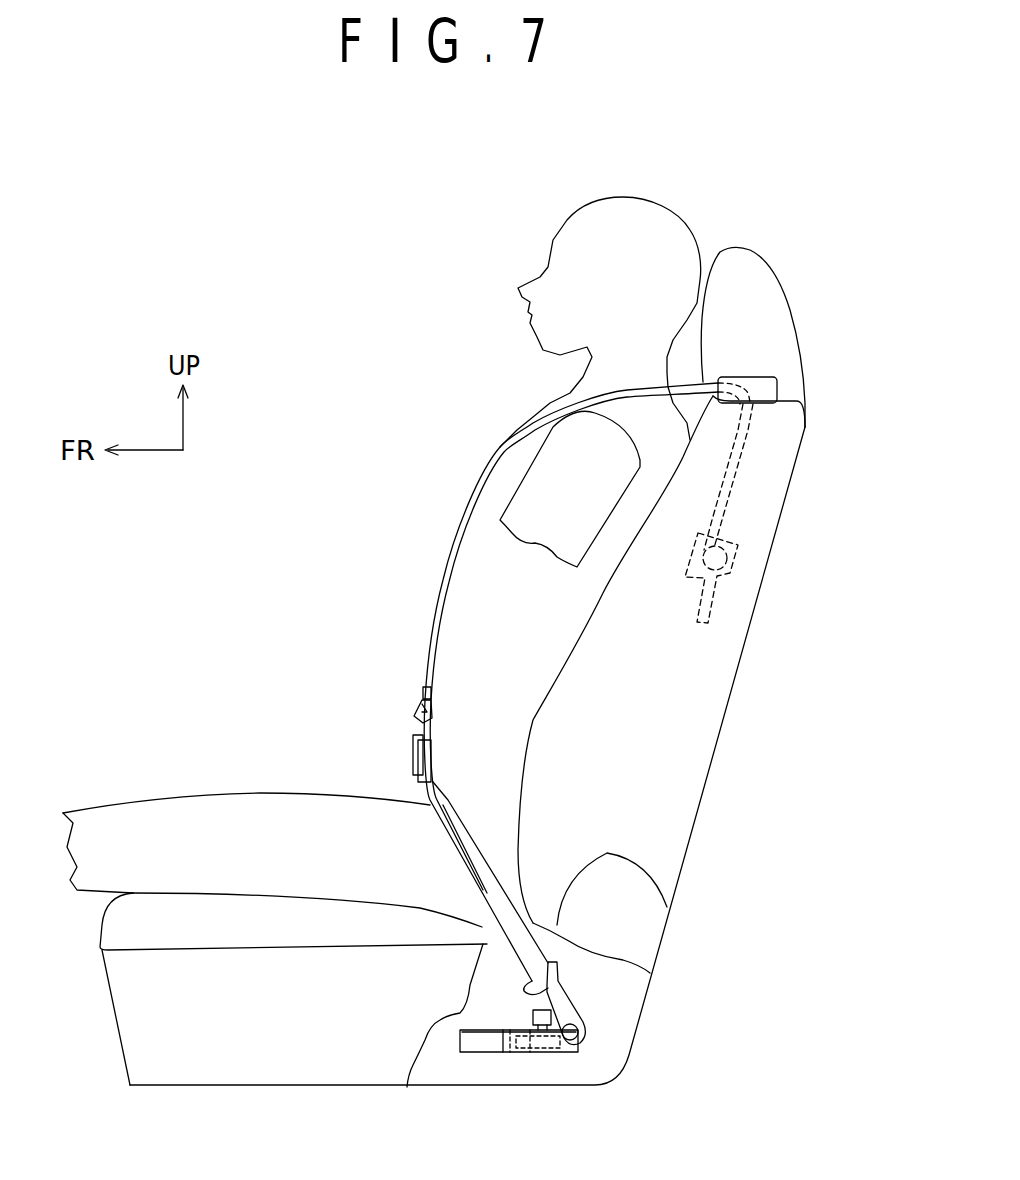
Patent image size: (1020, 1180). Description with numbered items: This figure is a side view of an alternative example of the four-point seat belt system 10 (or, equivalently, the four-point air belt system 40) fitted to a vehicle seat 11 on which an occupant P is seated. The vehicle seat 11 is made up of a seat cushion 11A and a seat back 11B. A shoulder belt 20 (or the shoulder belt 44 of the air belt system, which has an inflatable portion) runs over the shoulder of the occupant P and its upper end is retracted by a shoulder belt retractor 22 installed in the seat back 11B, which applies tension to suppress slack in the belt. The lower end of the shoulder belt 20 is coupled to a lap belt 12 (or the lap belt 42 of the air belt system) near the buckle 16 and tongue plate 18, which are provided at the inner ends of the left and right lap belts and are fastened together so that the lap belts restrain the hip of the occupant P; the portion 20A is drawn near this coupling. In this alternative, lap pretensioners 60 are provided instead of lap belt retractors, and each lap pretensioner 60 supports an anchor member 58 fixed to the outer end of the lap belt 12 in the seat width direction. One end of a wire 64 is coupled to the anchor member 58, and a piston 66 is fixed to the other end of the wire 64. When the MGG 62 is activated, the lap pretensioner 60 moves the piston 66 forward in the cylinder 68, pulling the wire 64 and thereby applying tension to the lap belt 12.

The occupant P is at (540, 391).
The four-point seat belt system 10 is at (551, 766).
The four-point air belt system 40 is at (551, 766).
The vehicle seat 11 is at (477, 667).
The seat cushion 11A is at (272, 907).
The seat back 11B is at (712, 699).
The shoulder belt 20 is at (547, 679).
The shoulder belt 44 is at (427, 607).
The tongue plate 20A is at (430, 690).
The buckle 16 is at (351, 743).
The tongue plate 18 is at (413, 777).
The lap belt 12 is at (490, 865).
The lap belt 42 is at (458, 861).
The shoulder belt retractor 22 is at (723, 570).
The anchor member 58 is at (550, 968).
The lap pretensioner 60 is at (497, 1062).
The MGG 62 is at (534, 1019).
The wire 64 is at (582, 1030).
The piston 66 is at (521, 1053).
The cylinder 68 is at (468, 1032).